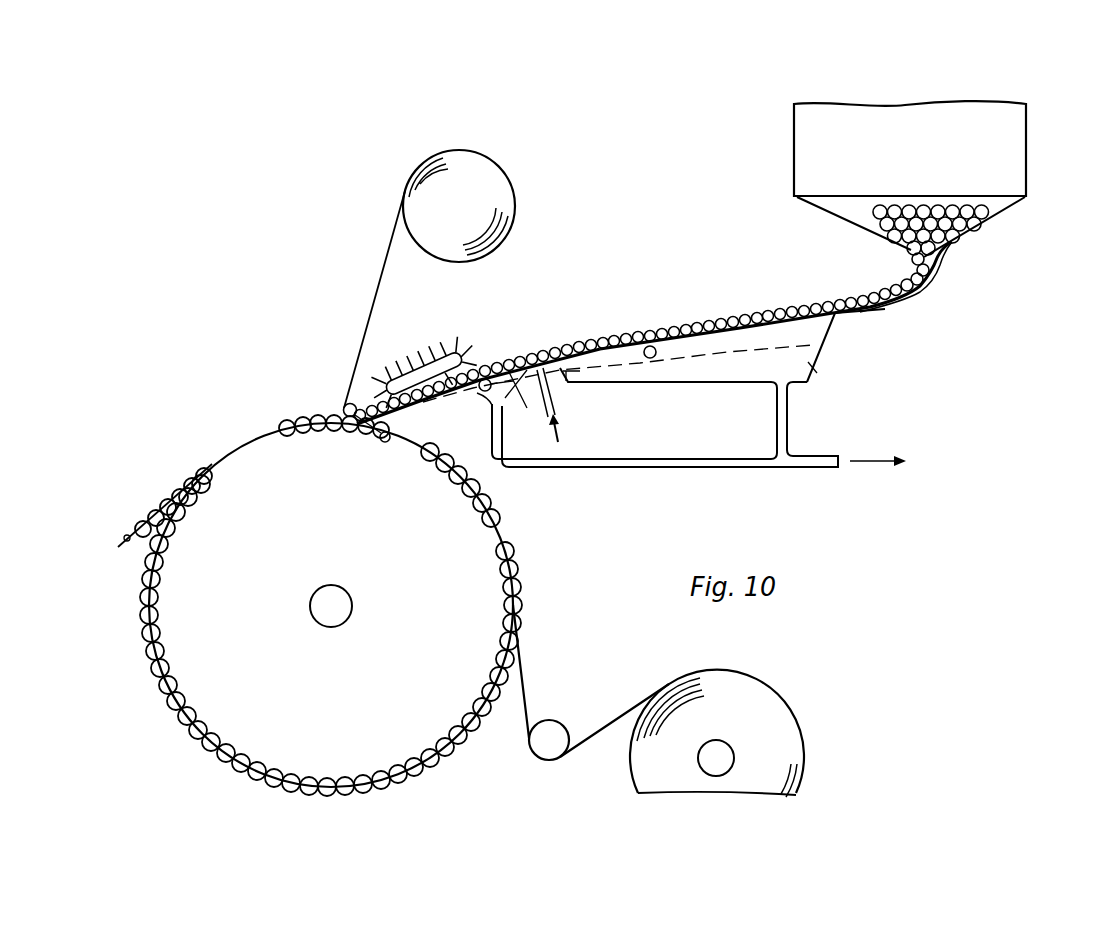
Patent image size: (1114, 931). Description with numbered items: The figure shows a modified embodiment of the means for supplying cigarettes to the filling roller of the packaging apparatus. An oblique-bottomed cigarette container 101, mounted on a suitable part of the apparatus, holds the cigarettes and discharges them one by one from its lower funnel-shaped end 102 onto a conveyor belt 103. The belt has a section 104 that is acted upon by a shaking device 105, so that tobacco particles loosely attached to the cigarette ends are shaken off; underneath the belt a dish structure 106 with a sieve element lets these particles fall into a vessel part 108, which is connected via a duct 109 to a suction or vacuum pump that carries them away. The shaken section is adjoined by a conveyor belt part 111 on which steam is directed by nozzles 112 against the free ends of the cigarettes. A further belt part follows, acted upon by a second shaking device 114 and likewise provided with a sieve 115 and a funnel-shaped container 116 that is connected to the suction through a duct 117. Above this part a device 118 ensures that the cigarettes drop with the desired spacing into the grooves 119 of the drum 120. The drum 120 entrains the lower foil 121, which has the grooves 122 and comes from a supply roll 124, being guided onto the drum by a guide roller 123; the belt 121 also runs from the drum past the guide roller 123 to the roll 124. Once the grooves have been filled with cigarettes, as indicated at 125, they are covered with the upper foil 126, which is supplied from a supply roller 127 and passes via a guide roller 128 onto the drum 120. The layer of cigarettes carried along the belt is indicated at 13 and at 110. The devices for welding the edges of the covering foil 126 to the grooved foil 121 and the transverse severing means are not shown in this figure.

The cigarette container 101 is at (1023, 131).
The funnel-shaped end 102 is at (909, 253).
The conveyor belt 103 is at (890, 303).
The conveyor belt section 104 is at (670, 322).
The shaking device 105 is at (657, 350).
The dish structure 106 is at (831, 331).
The vessel part 108 is at (812, 368).
The duct 109 is at (787, 423).
The particle layer on belt 110 is at (773, 308).
The conveyor belt part 111 is at (568, 352).
The nozzles 112 is at (562, 406).
The shaking device 114 is at (478, 392).
The sieve 115 is at (532, 403).
The funnel-shaped container 116 is at (490, 405).
The duct 117 is at (573, 468).
The spacing device 118 is at (431, 364).
The particle layer 13 is at (512, 350).
The grooves 119 is at (384, 443).
The drum 120 is at (380, 572).
The lower foil 121 is at (526, 672).
The grooves 122 is at (484, 540).
The guide roller 123 is at (555, 731).
The supply roll 124 is at (782, 712).
The filled grooves 125 is at (322, 444).
The upper foil 126 is at (375, 301).
The supply roller 127 is at (503, 187).
The guide roller 128 is at (349, 403).